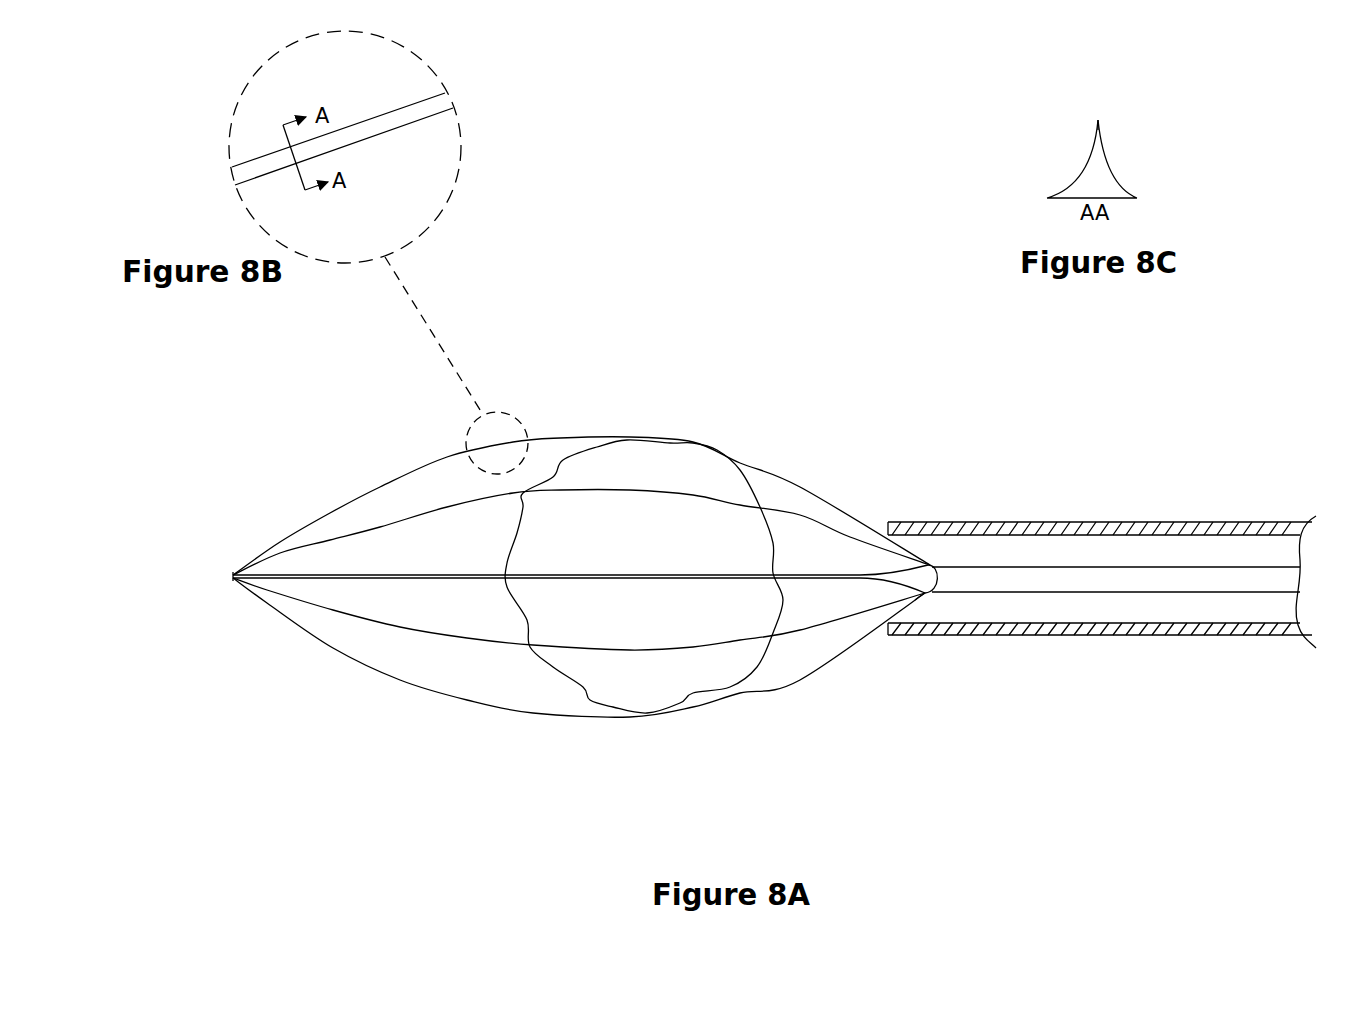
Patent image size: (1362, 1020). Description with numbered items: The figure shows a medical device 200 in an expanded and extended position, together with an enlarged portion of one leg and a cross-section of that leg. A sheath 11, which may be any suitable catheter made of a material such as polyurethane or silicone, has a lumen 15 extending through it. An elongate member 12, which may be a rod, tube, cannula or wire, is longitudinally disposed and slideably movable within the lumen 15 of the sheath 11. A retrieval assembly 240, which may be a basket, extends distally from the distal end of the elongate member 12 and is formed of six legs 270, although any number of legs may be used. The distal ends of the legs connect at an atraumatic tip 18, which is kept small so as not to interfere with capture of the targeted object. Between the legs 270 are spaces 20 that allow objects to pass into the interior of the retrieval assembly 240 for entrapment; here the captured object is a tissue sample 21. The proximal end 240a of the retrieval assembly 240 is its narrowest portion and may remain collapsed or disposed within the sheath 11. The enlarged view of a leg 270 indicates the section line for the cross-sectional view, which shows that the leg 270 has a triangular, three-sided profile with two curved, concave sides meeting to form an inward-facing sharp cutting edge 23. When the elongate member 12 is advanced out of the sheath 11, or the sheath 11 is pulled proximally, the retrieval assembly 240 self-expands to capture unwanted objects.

In FIG. 8A, the medical device 200 is at (567, 565).
In FIG. 8A, the tip 18 is at (233, 572).
In FIG. 8A, the spaces 20 is at (407, 492).
In FIG. 8A, the tissue sample 21 is at (673, 437).
In FIG. 8A, the legs 270 is at (760, 472).
In FIG. 8B, the legs 270 is at (397, 130).
In FIG. 8C, the legs 270 is at (1080, 173).
In FIG. 8A, the retrieval assembly 240 is at (783, 690).
In FIG. 8A, the proximal end of retrieval assembly 240a is at (923, 598).
In FIG. 8A, the sheath 11 is at (1193, 523).
In FIG. 8A, the elongate member 12 is at (1257, 567).
In FIG. 8A, the lumen 15 is at (972, 610).
In FIG. 8C, the sharp cutting edge 23 is at (1099, 121).